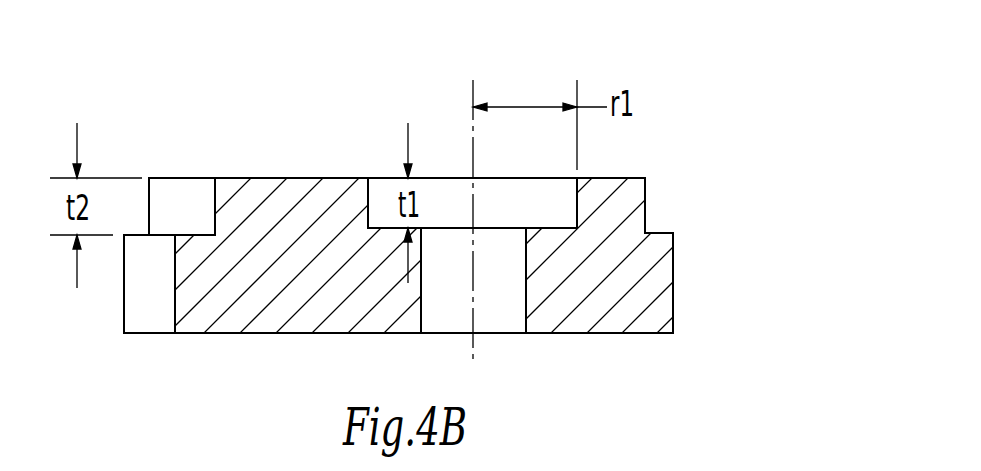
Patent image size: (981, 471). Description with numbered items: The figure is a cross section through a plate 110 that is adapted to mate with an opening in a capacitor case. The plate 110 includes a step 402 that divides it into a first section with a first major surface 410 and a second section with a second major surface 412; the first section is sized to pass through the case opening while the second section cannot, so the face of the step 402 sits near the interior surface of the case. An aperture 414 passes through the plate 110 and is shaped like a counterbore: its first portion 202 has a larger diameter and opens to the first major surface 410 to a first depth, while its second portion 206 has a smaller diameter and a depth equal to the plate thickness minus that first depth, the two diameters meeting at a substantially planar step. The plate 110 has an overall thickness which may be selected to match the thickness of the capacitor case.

The plate 110 is at (742, 31).
The step 402 is at (647, 193).
The first major surface 410 is at (187, 178).
The second major surface 412 is at (220, 333).
The first portion 202 is at (563, 217).
The second portion 206 is at (500, 333).
The aperture 414 is at (590, 158).